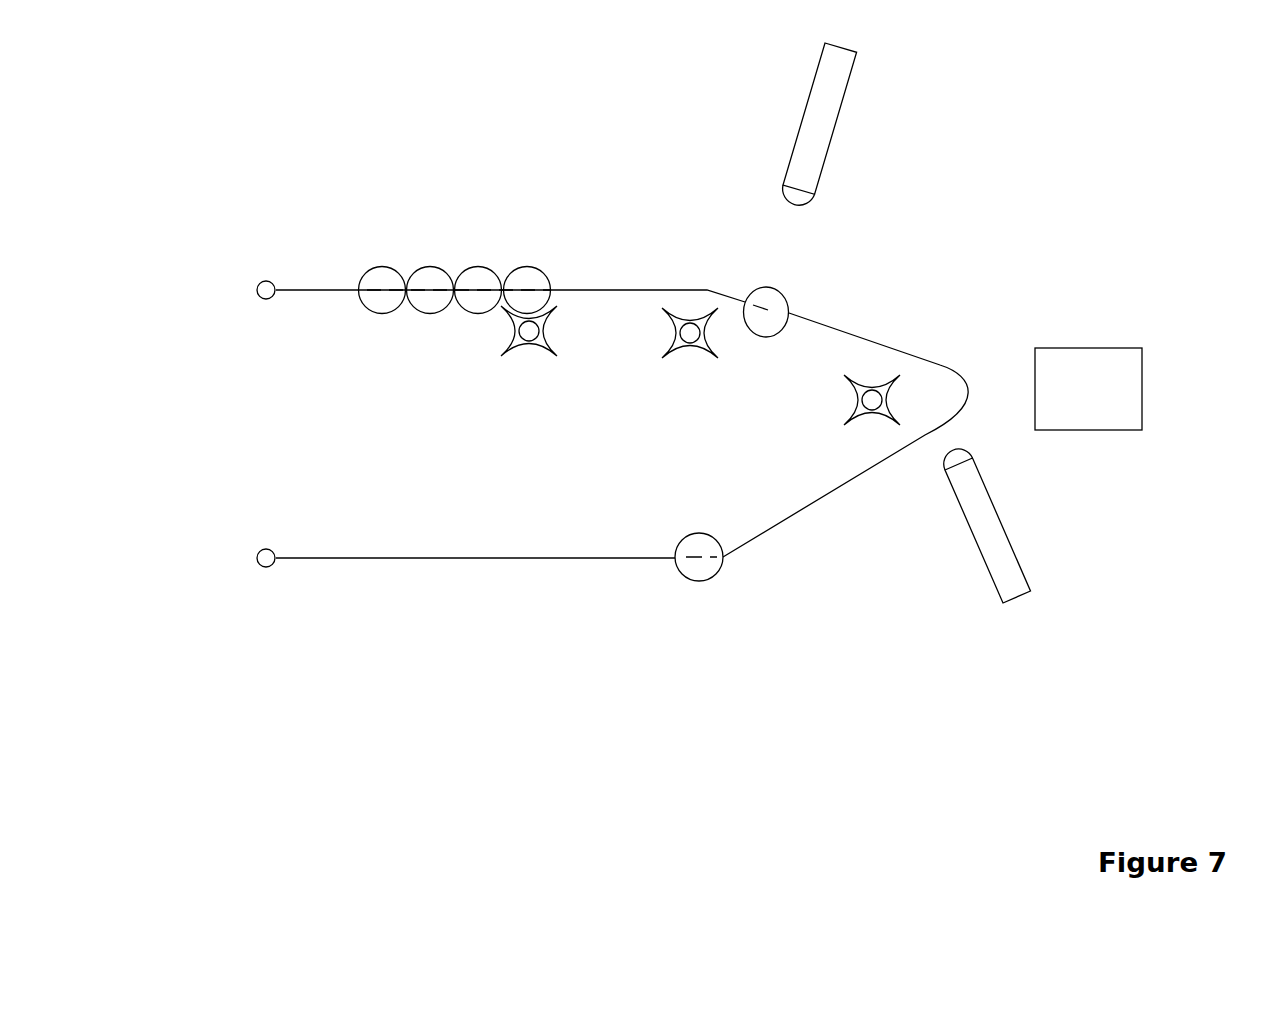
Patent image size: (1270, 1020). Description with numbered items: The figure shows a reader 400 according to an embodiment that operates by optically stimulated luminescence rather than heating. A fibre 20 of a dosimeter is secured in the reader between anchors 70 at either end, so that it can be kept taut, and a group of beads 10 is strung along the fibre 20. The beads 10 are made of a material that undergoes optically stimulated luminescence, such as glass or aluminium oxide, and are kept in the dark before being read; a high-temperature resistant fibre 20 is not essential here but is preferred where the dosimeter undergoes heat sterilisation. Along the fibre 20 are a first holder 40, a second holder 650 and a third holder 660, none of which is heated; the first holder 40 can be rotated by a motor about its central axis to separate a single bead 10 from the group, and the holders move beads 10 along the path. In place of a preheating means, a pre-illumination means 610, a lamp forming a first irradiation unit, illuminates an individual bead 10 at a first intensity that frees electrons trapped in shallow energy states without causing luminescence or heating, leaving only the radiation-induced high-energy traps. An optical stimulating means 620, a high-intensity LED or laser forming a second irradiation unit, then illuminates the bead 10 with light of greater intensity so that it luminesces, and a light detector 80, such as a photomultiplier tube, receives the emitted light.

The reader 400 is at (326, 126).
The fibre 20 is at (342, 290).
The bead 10 is at (392, 267).
The first holder 40 is at (551, 307).
The second holder 650 is at (711, 306).
The third holder 660 is at (891, 376).
The anchor 70 is at (257, 290).
The light detector 80 is at (1092, 348).
The pre-illumination means 610 is at (842, 105).
The optical stimulating means 620 is at (1017, 552).